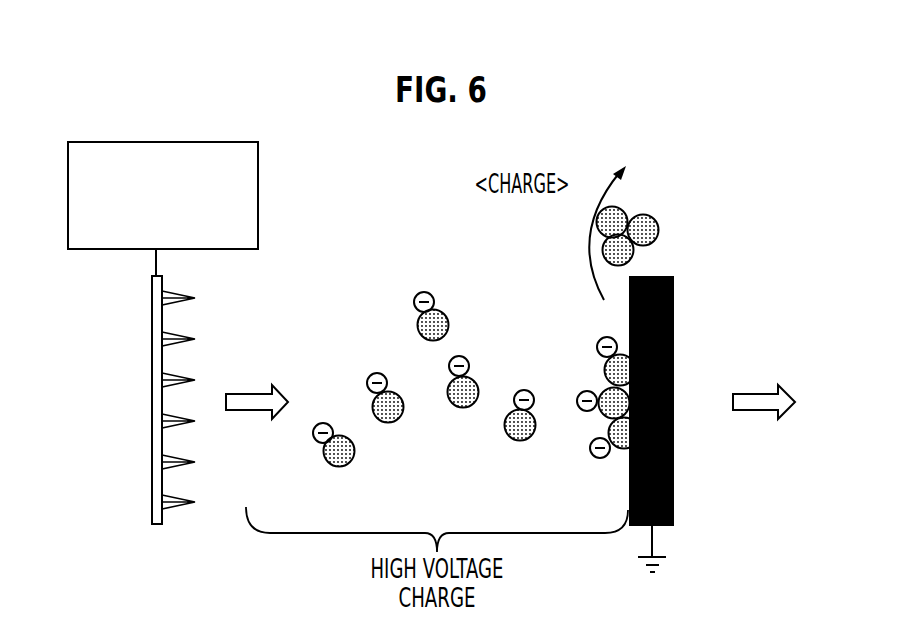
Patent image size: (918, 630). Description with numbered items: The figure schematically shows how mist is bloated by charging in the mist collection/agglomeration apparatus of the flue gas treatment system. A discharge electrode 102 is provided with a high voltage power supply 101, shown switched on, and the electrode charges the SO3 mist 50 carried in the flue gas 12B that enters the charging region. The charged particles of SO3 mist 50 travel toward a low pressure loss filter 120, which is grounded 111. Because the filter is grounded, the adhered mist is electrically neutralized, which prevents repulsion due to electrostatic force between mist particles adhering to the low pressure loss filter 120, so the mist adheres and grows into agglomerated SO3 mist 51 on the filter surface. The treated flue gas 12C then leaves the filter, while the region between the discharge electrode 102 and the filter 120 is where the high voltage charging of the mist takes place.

The high voltage power supply 101 is at (158, 122).
The discharge electrode 102 is at (170, 503).
The flue gas 12B is at (263, 393).
The flue gas 12C is at (765, 388).
The SO3 mist 50 is at (443, 312).
The agglomerated SO3 mist 51 is at (660, 230).
The low pressure loss filter 120 is at (674, 481).
The ground 111 is at (657, 548).